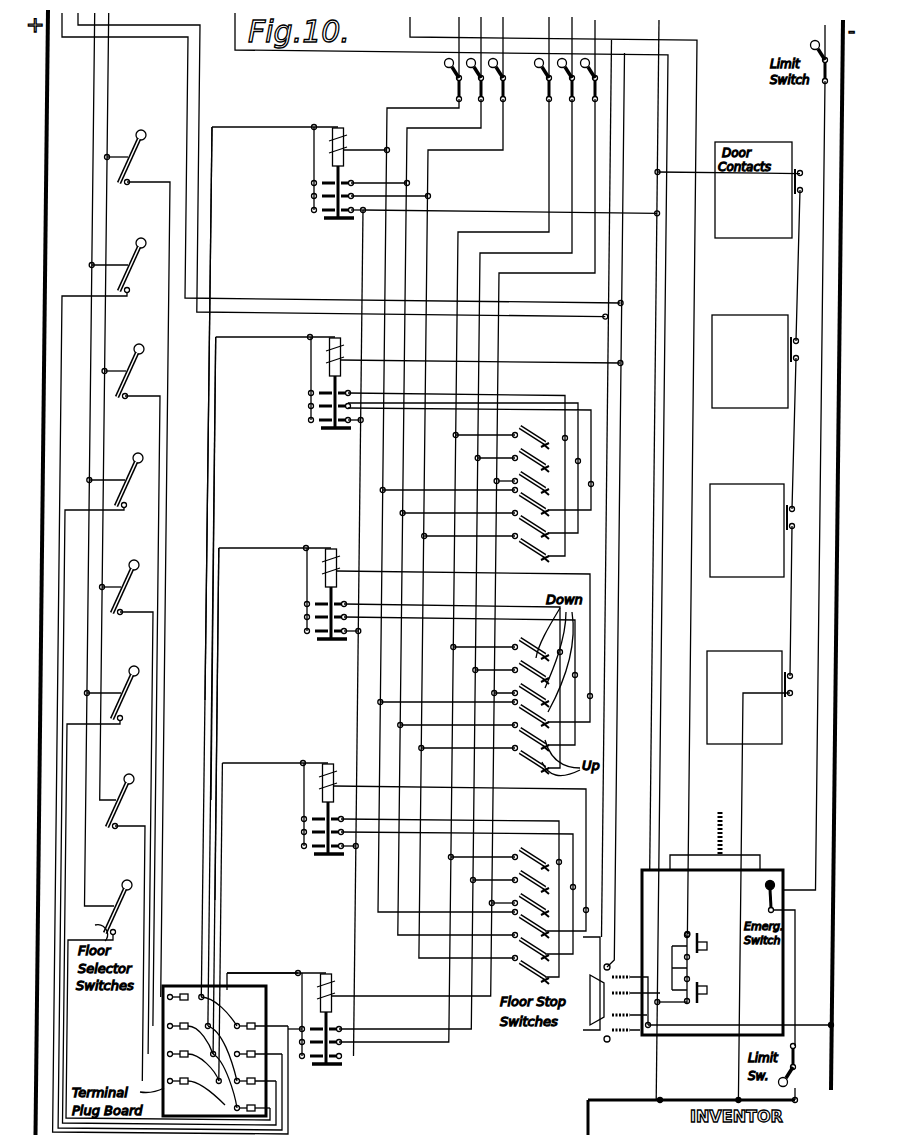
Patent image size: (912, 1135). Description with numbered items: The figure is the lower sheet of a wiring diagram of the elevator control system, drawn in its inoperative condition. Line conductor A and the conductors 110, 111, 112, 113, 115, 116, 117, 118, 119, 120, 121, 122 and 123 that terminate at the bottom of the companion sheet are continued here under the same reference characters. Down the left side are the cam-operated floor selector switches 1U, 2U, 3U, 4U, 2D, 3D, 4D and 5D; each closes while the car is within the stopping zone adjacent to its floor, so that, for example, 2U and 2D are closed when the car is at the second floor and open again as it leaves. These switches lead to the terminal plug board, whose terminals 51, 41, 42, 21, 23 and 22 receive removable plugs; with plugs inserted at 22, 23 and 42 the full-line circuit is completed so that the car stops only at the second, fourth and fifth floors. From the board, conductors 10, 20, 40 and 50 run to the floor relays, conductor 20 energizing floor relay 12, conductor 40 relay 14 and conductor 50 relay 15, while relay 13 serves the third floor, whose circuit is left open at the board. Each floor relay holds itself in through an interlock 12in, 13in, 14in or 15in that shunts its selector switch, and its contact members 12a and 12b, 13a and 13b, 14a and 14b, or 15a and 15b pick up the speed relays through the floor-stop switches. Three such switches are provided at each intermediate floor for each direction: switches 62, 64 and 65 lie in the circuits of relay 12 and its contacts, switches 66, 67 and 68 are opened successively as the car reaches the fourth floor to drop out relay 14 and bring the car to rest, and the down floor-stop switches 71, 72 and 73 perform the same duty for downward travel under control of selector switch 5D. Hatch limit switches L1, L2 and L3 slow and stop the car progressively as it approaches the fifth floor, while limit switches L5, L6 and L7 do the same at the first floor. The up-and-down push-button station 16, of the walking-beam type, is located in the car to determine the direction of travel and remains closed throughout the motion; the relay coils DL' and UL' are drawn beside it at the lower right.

The conductor 110 is at (90, 50).
The conductor 111 is at (137, 30).
The conductor 112 is at (92, 107).
The conductor 113 is at (120, 103).
The conductor 115 is at (410, 28).
The conductor 116 is at (474, 47).
The conductor 117 is at (496, 47).
The conductor 118 is at (503, 28).
The conductor 119 is at (564, 47).
The conductor 120 is at (587, 45).
The conductor 121 is at (596, 30).
The conductor 122 is at (660, 28).
The conductor 123 is at (825, 28).
The floor relay 15 is at (338, 127).
The relay contact 15a is at (312, 182).
The relay contact 15b is at (312, 196).
The interlock 15in is at (312, 210).
The floor relay 14 is at (335, 337).
The contact member 14a is at (310, 406).
The contact member 14b is at (312, 393).
The interlock 14in is at (310, 423).
The floor relay 13 is at (331, 548).
The relay contact 13a is at (306, 604).
The relay contact 13b is at (306, 616).
The relay contact 13in is at (308, 632).
The floor relay 12 is at (328, 764).
The contact member 12a is at (304, 818).
The contact member 12b is at (300, 832).
The interlock 12in is at (304, 846).
The push-button station 16 is at (716, 980).
The line conductor A is at (362, 258).
The down floor-stop switch 71 is at (550, 437).
The down floor-stop switch 72 is at (529, 488).
The down floor-stop switch 73 is at (546, 487).
The floor-stop switch 66 is at (475, 501).
The floor-stop switch 67 is at (552, 536).
The floor-stop switch 68 is at (550, 559).
The floor stop switch 62 is at (506, 913).
The floor switch 64 is at (524, 915).
The floor stop switch 65 is at (532, 961).
The conductor 40 is at (203, 918).
The conductor 50 is at (210, 948).
The conductor 20 is at (215, 963).
The conductor 10 is at (222, 968).
The terminal 51 is at (172, 994).
The terminal 41 is at (189, 1029).
The plug position 42 is at (248, 1042).
The terminal 21 is at (195, 1082).
The plug position 23 is at (244, 1081).
The plug position 22 is at (253, 1100).
The floor selector switch 5D is at (138, 563).
The floor selector switch 4U is at (170, 686).
The floor selector switch 4D is at (132, 685).
The floor selector switch 3U is at (170, 791).
The floor selector switch 3D is at (130, 807).
The floor selector switch 2U is at (170, 895).
The floor selector switch 2D is at (130, 927).
The floor selector switch 1U is at (168, 1000).
The up limit switch L1 is at (446, 486).
The limit switch L2 is at (456, 497).
The limit switch L3 is at (467, 509).
The limit switch L5 is at (453, 551).
The limit switch L6 is at (465, 544).
The limit switch L7 is at (473, 528).
The down relay coil DL' is at (621, 983).
The up relay coil UL' is at (625, 1037).